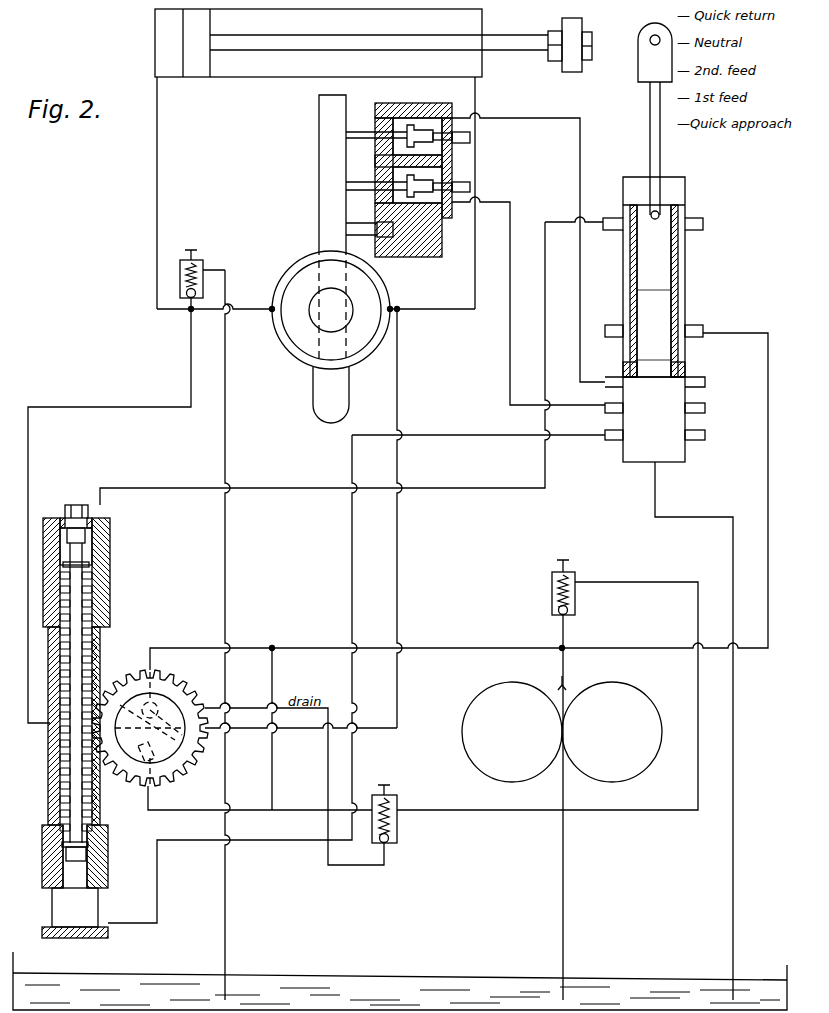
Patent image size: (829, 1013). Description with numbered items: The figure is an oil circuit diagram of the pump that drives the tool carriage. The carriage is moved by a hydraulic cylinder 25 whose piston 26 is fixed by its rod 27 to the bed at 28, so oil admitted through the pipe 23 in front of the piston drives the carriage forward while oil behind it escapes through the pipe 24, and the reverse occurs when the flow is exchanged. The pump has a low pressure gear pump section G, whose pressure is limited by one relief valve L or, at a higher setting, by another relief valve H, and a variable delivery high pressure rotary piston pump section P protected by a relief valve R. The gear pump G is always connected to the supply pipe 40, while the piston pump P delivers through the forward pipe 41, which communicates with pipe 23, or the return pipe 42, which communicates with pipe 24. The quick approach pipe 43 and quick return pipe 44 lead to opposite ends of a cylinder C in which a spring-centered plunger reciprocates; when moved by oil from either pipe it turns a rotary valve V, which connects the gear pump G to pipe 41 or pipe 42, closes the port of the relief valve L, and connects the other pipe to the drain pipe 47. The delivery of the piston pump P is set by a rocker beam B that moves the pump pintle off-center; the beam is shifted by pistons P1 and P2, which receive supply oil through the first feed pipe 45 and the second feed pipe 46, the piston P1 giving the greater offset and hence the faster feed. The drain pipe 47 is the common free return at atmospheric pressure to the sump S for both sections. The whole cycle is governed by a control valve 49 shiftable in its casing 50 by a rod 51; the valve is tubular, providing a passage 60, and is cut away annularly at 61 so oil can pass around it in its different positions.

The pipe 23 is at (157, 183).
The pipe 24 is at (431, 180).
The hydraulic cylinder 25 is at (242, 67).
The piston 26 is at (186, 60).
The rod 27 is at (518, 42).
The bed attachment point 28 is at (485, 21).
The supply pipe 40 is at (768, 357).
The forward pipe 41 is at (248, 317).
The return pipe 42 is at (432, 313).
The quick approach pipe 43 is at (570, 438).
The quick return pipe 44 is at (562, 223).
The first feed pipe 45 is at (512, 247).
The second feed pipe 46 is at (570, 118).
The drain pipe 47 is at (248, 706).
The control valve 49 is at (657, 277).
The valve casing 50 is at (622, 292).
The rod 51 is at (662, 155).
The passage 60 is at (654, 344).
The annular cut-away 61 is at (630, 302).
The rocker beam B is at (317, 148).
The rotary piston pump section P is at (283, 350).
The piston P1 is at (358, 192).
The piston P2 is at (358, 138).
The relief valve R is at (205, 263).
The cylinder C is at (110, 553).
The sump S is at (100, 660).
The rotary valve V is at (165, 752).
The gear pump section G is at (485, 690).
The relief valve H is at (577, 604).
The relief valve L is at (400, 833).